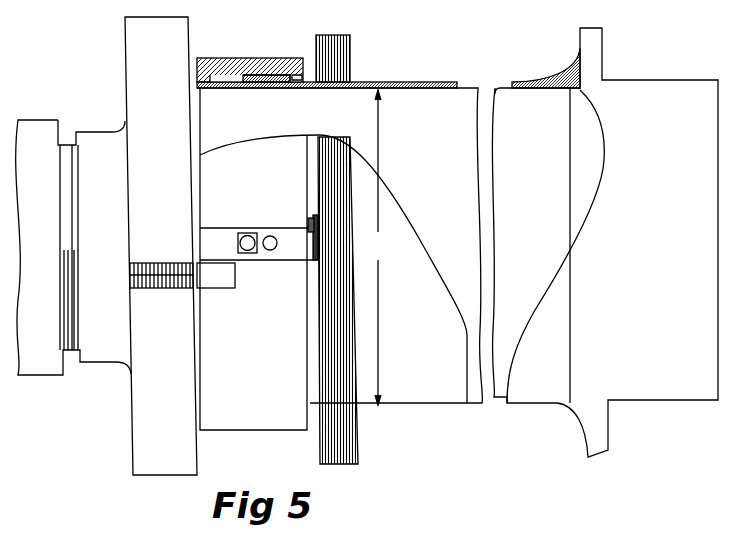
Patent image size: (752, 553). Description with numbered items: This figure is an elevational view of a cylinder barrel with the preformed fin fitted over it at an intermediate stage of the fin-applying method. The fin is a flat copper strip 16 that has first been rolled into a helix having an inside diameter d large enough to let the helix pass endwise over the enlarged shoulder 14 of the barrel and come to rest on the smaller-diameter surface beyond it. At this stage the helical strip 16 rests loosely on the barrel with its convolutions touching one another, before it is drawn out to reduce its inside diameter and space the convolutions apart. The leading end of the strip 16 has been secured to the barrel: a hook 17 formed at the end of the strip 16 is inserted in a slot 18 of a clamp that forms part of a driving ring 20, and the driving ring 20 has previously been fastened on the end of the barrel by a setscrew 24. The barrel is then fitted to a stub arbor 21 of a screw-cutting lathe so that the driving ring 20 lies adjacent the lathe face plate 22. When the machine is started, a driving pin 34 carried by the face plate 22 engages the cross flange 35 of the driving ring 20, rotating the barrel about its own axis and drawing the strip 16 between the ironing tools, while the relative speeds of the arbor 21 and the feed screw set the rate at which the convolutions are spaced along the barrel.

The face plate 22 is at (133, 65).
The driving ring 20 is at (285, 46).
The strip 16 is at (350, 47).
The shoulder 14 is at (243, 78).
The stub arbor 21 is at (339, 245).
The setscrew 24 is at (248, 233).
The hook 17 is at (316, 214).
The slot 18 is at (309, 226).
The cross flange 35 is at (259, 244).
The driving pin 34 is at (218, 290).
The inside diameter d is at (376, 247).